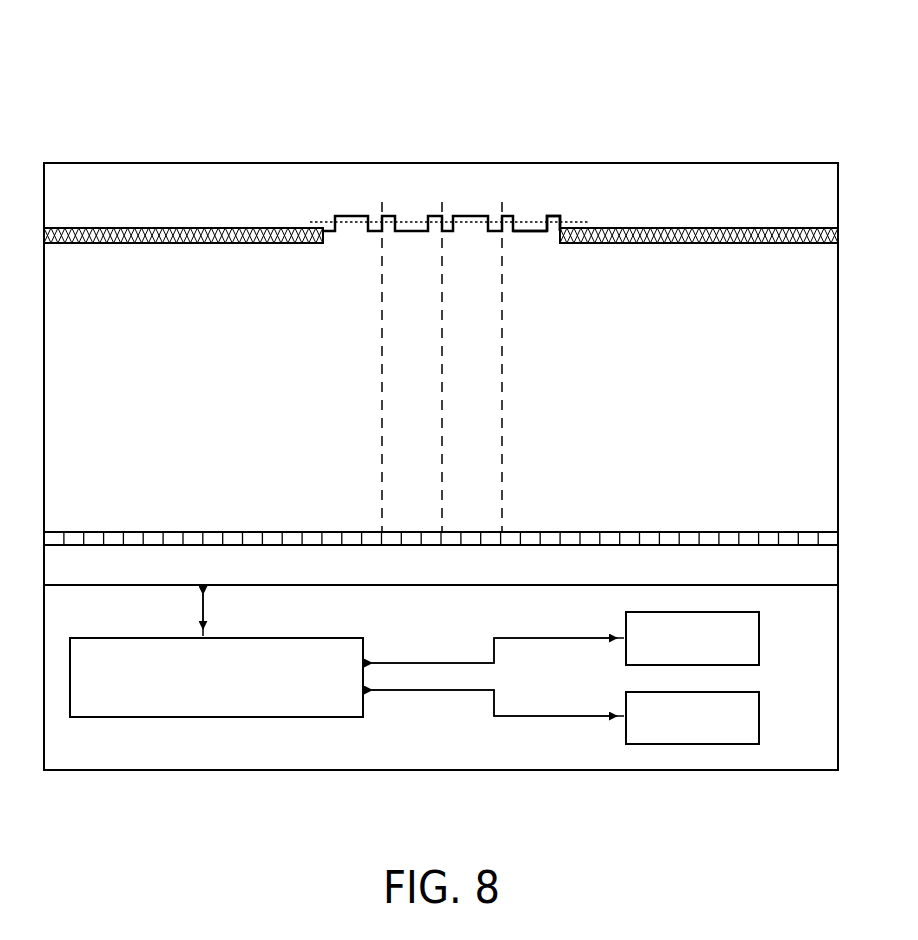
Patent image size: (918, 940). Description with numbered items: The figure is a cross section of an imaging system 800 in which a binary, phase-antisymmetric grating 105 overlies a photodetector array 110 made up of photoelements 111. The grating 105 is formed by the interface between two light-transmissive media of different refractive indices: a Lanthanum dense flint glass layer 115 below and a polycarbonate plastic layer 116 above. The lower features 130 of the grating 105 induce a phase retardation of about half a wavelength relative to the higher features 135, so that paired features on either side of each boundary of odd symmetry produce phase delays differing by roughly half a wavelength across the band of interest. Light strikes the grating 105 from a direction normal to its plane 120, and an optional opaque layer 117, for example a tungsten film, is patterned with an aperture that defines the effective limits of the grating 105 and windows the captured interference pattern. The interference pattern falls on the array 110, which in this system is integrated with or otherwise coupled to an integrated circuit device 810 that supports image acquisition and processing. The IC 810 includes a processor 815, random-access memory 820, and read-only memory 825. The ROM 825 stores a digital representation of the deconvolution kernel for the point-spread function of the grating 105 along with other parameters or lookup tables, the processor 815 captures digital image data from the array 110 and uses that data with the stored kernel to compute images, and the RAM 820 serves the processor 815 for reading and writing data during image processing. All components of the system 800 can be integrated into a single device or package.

The imaging system 800 is at (125, 55).
The polycarbonate plastic layer 116 is at (138, 198).
The Lanthanum dense flint glass layer 115 is at (213, 385).
The opaque layer 117 is at (149, 244).
The plane of grating 120 is at (322, 223).
The higher features 135 is at (548, 216).
The lower features 130 is at (533, 232).
The phase-antisymmetric grating 105 is at (362, 257).
The photoelements 111 is at (192, 530).
The photodetector array 110 is at (539, 581).
The integrated circuit device 810 is at (468, 766).
The processor 815 is at (275, 688).
The random-access memory 820 is at (730, 650).
The read-only memory 825 is at (730, 729).